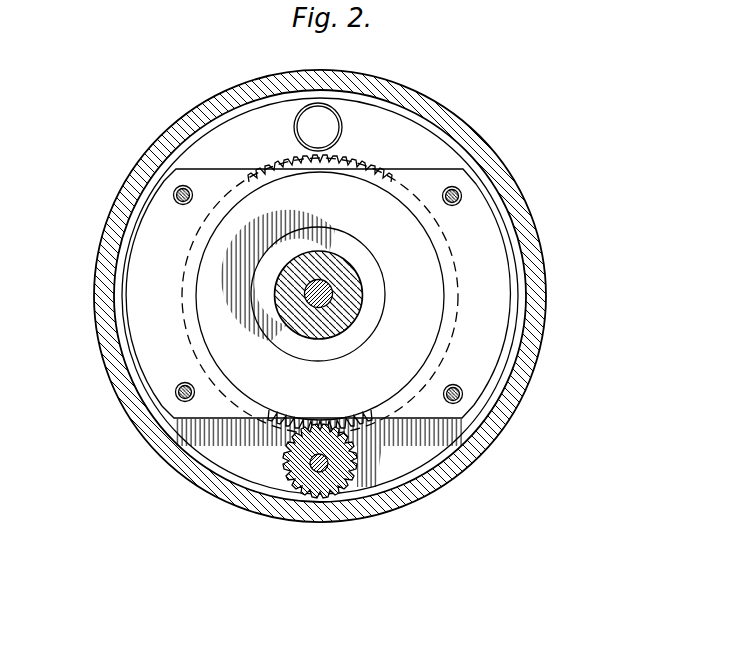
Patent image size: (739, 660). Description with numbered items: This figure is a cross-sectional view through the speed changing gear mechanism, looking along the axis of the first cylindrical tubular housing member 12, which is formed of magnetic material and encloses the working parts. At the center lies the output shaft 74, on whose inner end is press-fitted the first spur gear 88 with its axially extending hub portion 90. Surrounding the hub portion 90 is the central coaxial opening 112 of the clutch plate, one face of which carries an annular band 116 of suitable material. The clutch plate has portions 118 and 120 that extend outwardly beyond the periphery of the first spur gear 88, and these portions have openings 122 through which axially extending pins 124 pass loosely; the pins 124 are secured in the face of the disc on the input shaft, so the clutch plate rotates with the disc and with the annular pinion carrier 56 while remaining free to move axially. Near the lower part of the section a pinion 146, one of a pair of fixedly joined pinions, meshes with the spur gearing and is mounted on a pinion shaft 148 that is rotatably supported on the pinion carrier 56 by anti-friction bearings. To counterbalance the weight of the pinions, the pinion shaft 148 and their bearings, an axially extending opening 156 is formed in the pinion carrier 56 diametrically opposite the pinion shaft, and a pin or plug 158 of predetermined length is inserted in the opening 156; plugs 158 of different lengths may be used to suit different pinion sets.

The first cylindrical tubular housing member 12 is at (492, 148).
The annular pinion carrier 56 is at (257, 447).
The output shaft 74 is at (315, 297).
The first spur gear 88 is at (358, 158).
The hub portion 90 is at (363, 304).
The central coaxial opening 112 is at (370, 252).
The annular band 116 is at (420, 327).
The portion of clutch plate 118 is at (148, 333).
The portion of clutch plate 120 is at (485, 290).
The openings 122 is at (458, 388).
The axially extending pins 124 is at (458, 398).
The pinion 146 is at (312, 500).
The pinion shaft 148 is at (347, 482).
The axially extending opening 156 is at (333, 110).
The pin or plug 158 is at (330, 130).